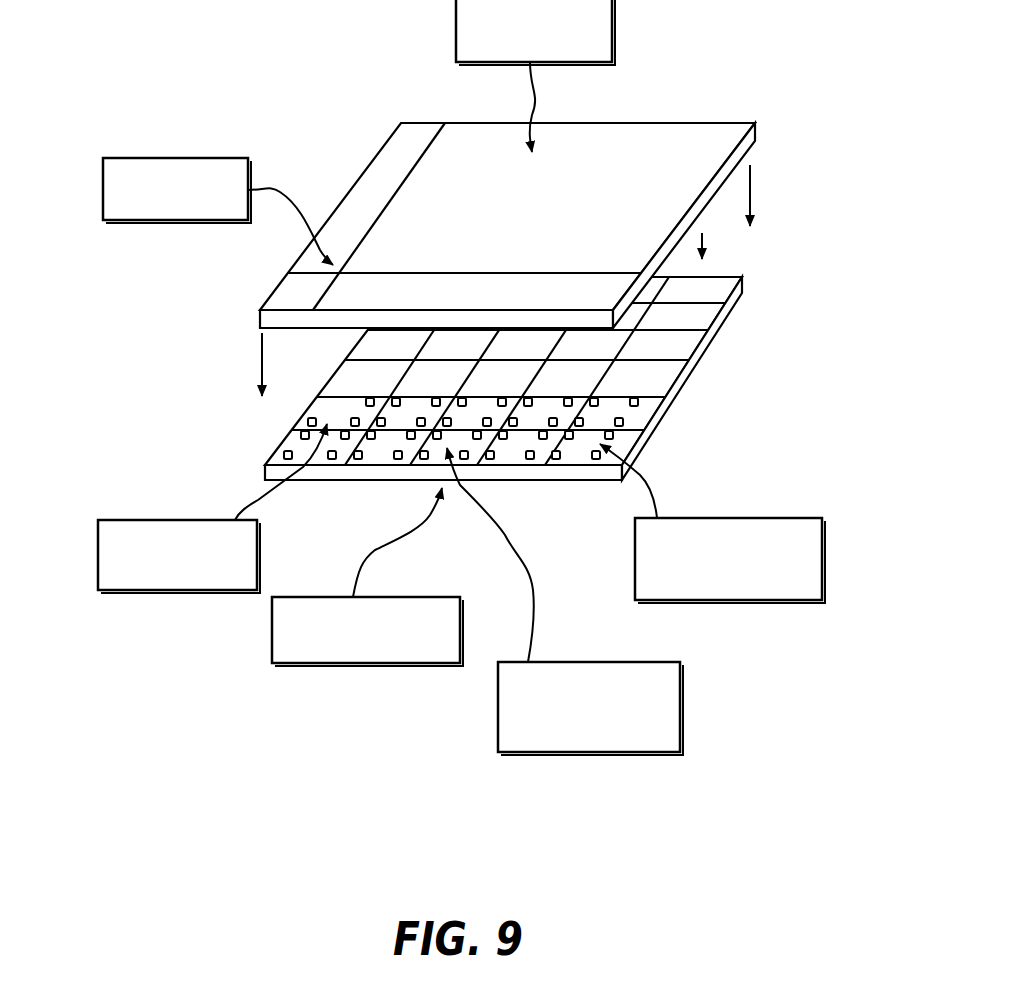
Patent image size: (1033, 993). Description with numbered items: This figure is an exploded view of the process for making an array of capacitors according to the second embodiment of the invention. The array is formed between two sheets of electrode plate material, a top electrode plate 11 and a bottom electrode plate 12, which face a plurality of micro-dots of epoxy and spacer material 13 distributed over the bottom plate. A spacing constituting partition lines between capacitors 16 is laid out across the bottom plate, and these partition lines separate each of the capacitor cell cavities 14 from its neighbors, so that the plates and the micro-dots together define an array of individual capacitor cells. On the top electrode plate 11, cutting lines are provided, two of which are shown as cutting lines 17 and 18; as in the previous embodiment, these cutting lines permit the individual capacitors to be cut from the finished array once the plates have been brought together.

The top electrode plate 11 is at (456, 22).
The bottom electrode plate 12 is at (318, 663).
The micro-dots of epoxy and spacer material 13 is at (590, 752).
The capacitor cell cavities 14 is at (133, 590).
The partition lines between capacitors 16 is at (725, 600).
The cutting line 17 is at (389, 202).
The cutting line 18 is at (617, 273).